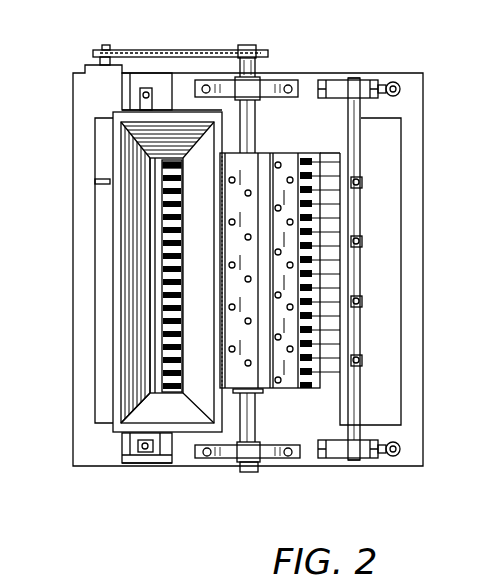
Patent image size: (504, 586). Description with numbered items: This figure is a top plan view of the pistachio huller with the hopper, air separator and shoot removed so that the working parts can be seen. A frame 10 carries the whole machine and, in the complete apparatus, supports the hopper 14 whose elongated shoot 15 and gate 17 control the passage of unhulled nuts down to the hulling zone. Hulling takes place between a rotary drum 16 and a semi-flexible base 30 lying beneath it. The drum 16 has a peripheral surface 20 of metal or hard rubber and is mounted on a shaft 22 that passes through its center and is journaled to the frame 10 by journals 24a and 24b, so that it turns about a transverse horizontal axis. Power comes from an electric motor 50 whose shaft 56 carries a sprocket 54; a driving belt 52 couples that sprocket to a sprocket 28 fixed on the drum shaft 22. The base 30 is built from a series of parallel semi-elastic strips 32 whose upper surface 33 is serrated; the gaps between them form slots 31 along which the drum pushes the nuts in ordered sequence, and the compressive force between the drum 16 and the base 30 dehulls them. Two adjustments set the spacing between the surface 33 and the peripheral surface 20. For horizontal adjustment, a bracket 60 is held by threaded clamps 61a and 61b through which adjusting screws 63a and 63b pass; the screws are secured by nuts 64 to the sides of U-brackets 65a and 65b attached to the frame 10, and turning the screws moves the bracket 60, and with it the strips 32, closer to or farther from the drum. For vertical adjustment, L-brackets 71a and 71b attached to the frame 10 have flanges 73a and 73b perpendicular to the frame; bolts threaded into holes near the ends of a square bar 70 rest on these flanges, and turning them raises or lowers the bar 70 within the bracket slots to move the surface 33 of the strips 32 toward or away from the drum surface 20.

The frame 10 is at (73, 96).
The hopper 14 is at (117, 275).
The shoot 15 is at (128, 355).
The drum 16 is at (270, 258).
The gate 17 is at (160, 250).
The peripheral surface 20 is at (280, 155).
The shaft 22 is at (242, 473).
The journal 24a is at (272, 462).
The journal 24b is at (286, 82).
The sprocket 28 is at (265, 50).
The base 30 is at (312, 188).
The slots 31 is at (163, 213).
The semi-elastic strips 32 is at (165, 350).
The upper surface 33 is at (160, 188).
The electric motor 50 is at (97, 147).
The driving belt 52 is at (148, 50).
The sprocket 54 is at (92, 45).
The shaft 56 is at (97, 60).
The bracket 60 is at (356, 398).
The threaded clamp 61a is at (368, 462).
The threaded clamp 61b is at (347, 80).
The adjusting screw 63a is at (308, 458).
The adjusting screw 63b is at (322, 80).
The nuts 64 is at (340, 146).
The U-bracket 65a is at (379, 463).
The U-bracket 65b is at (376, 78).
The square bar 70 is at (137, 452).
The L-bracket 71a is at (172, 462).
The L-bracket 71b is at (168, 72).
The flange 73a is at (127, 448).
The flange 73b is at (134, 92).